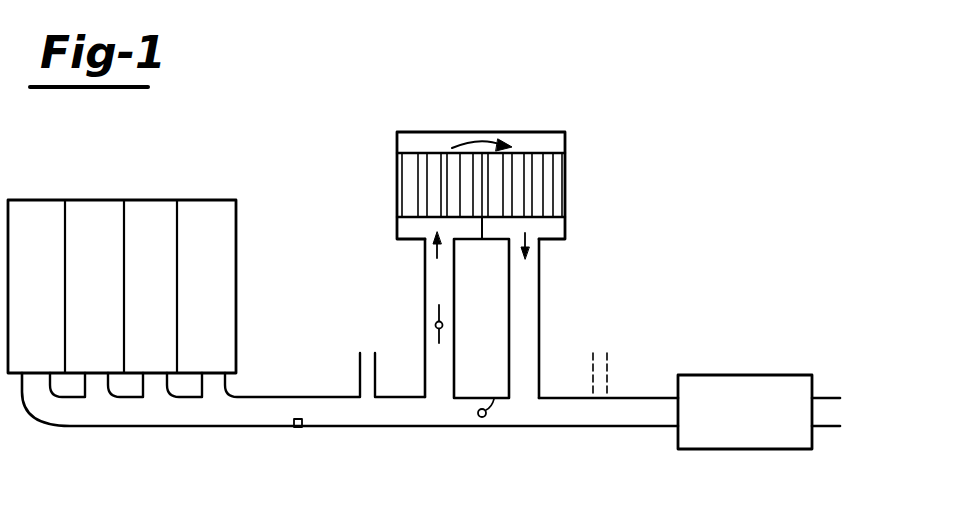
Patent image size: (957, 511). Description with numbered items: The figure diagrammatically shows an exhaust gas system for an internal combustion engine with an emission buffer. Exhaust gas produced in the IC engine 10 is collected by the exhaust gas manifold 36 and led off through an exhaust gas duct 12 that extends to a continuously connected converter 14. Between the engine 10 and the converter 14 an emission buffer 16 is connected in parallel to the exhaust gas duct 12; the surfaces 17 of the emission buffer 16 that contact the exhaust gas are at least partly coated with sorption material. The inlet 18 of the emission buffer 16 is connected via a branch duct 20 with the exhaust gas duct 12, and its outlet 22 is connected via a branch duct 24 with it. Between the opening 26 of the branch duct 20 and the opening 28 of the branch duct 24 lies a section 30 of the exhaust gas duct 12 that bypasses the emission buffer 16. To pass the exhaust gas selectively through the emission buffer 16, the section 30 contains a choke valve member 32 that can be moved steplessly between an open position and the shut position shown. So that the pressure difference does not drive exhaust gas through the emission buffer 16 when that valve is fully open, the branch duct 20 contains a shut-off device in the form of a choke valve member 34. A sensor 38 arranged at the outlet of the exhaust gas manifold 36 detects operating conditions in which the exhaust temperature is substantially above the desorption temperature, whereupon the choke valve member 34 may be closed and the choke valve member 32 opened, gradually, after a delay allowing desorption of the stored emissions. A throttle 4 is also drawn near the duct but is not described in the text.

The throttle valve 4 is at (358, 378).
The IC engine 10 is at (140, 224).
The exhaust gas duct 12 is at (265, 408).
The converter 14 is at (714, 386).
The emission buffer 16 is at (568, 186).
The surfaces of the emission buffer 17 is at (548, 176).
The inlet of the emission buffer 18 is at (428, 254).
The branch duct 20 is at (425, 368).
The outlet of the emission buffer 22 is at (536, 273).
The branch duct 24 is at (530, 372).
The opening of the branch duct 26 is at (441, 393).
The opening of the branch duct 28 is at (535, 412).
The section of the exhaust gas duct 30 is at (456, 413).
The choke valve member 32 is at (482, 418).
The choke valve member 34 is at (442, 314).
The exhaust gas manifold 36 is at (172, 405).
The sensor 38 is at (299, 428).